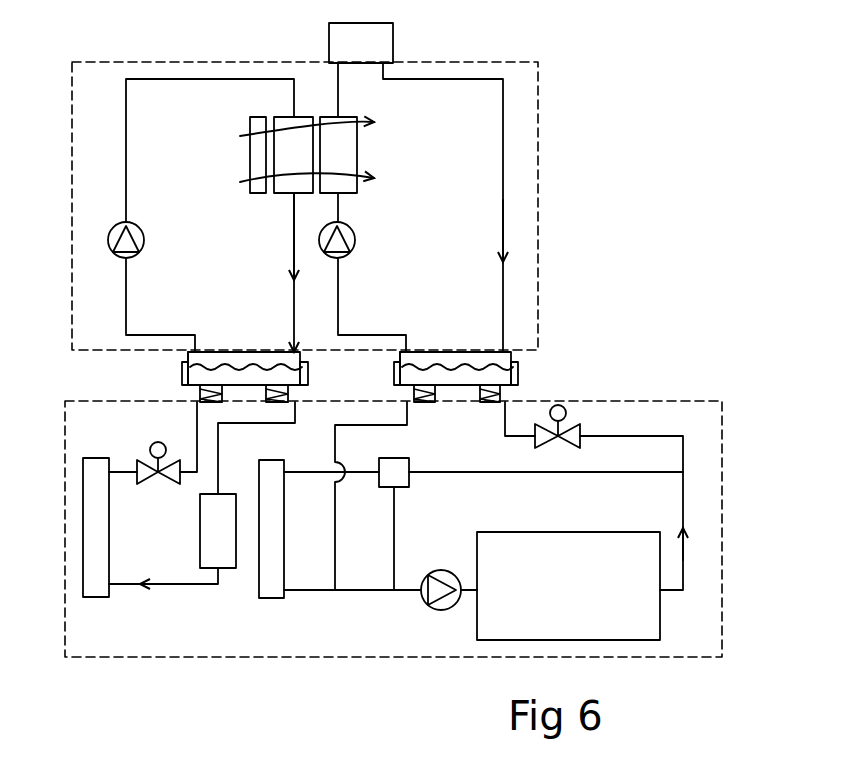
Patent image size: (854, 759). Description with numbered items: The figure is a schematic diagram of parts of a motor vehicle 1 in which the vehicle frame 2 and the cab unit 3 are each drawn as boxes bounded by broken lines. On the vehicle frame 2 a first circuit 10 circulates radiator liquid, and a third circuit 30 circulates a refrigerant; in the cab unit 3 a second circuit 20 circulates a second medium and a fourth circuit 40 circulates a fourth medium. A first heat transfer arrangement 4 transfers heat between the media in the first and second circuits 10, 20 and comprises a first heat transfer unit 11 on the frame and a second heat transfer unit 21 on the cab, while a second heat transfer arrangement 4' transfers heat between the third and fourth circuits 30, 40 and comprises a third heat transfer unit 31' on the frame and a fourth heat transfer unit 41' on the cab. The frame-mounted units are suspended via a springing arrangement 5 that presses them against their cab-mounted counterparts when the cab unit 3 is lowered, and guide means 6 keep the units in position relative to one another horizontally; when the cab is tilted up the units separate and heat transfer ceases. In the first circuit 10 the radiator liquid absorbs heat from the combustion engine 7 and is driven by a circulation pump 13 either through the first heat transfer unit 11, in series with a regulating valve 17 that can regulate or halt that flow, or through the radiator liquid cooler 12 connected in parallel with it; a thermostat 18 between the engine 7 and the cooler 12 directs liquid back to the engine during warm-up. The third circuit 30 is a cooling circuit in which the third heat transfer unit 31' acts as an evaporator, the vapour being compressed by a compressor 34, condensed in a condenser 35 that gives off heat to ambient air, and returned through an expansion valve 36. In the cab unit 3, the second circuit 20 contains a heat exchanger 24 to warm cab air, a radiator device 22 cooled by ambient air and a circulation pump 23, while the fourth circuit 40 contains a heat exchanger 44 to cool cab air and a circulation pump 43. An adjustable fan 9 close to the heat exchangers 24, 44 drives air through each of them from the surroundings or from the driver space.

The vehicle 1 is at (640, 248).
The vehicle frame 2 is at (678, 395).
The cab unit 3 is at (538, 200).
The first heat transfer arrangement 4 is at (447, 336).
The second heat transfer arrangement 4' is at (232, 336).
The springing arrangement 5 is at (277, 398).
The guide means 6 is at (182, 373).
The combustion engine 7 is at (652, 623).
The adjustable fan 9 is at (250, 157).
The first circuit 10 is at (703, 488).
The first heat transfer unit 11 is at (460, 370).
The radiator liquid cooler 12 is at (270, 592).
The circulation pump 13 is at (443, 575).
The regulating valve 17 is at (568, 430).
The thermostat 18 is at (388, 480).
The second circuit 20 is at (516, 128).
The second heat transfer unit 21 is at (423, 356).
The radiator device 22 is at (395, 44).
The circulation pump 23 is at (355, 240).
The heat exchanger 24 is at (355, 156).
The third circuit 30 is at (148, 606).
The third heat transfer unit 31' is at (246, 332).
The compressor 34 is at (200, 537).
The condenser 35 is at (103, 514).
The expansion valve 36 is at (142, 465).
The fourth circuit 40 is at (112, 106).
The fourth heat transfer unit 41' is at (219, 334).
The circulation pump 43 is at (145, 240).
The heat exchanger 44 is at (285, 193).